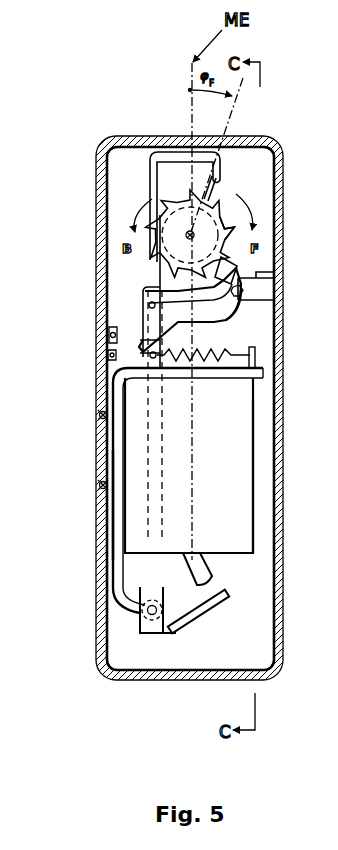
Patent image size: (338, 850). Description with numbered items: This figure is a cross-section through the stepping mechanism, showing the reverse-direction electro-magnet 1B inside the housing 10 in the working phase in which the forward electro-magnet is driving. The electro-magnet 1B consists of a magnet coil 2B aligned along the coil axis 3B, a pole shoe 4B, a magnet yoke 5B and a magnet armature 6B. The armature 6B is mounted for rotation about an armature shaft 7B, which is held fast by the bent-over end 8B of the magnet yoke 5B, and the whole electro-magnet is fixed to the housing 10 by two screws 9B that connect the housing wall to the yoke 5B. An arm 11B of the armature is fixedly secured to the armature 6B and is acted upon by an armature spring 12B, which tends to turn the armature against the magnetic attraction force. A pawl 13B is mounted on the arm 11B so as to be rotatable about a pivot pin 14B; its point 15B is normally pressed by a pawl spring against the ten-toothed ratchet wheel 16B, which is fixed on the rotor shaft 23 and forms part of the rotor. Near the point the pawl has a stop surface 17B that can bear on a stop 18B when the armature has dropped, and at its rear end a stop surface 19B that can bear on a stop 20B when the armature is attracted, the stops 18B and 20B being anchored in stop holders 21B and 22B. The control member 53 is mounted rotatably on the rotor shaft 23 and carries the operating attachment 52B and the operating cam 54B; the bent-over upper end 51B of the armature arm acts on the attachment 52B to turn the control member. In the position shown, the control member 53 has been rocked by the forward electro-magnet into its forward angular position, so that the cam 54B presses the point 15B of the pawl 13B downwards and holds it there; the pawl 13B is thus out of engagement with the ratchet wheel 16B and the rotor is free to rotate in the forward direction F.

The housing 10 is at (100, 553).
The control member 53 is at (180, 210).
The ratchet wheel 16B is at (232, 219).
The rotor shaft 23 is at (188, 233).
The upper end of armature arm 51B is at (222, 168).
The operating attachment 52B is at (208, 192).
The point of pawl 15B is at (158, 264).
The pivot pin 14B is at (143, 298).
The stop surface 19B is at (143, 330).
The stop 20B is at (108, 333).
The stop holder 22B is at (106, 355).
The screws 9B is at (100, 488).
The pawl 13B is at (180, 350).
The stop surface 17B is at (233, 320).
The operating cam 54B is at (234, 268).
The stop holder 21B is at (256, 271).
The stop 18B is at (243, 292).
The armature spring 12B is at (200, 356).
The coil axis 3B is at (190, 446).
The arm of the armature 11B is at (150, 393).
The electro-magnet 1B is at (220, 482).
The magnet coil 2B is at (254, 527).
The magnet yoke 5B is at (112, 522).
The pole shoe 4B is at (208, 572).
The magnet armature 6B is at (200, 621).
The armature shaft 7B is at (140, 626).
The bent-over end of magnet yoke 8B is at (140, 599).